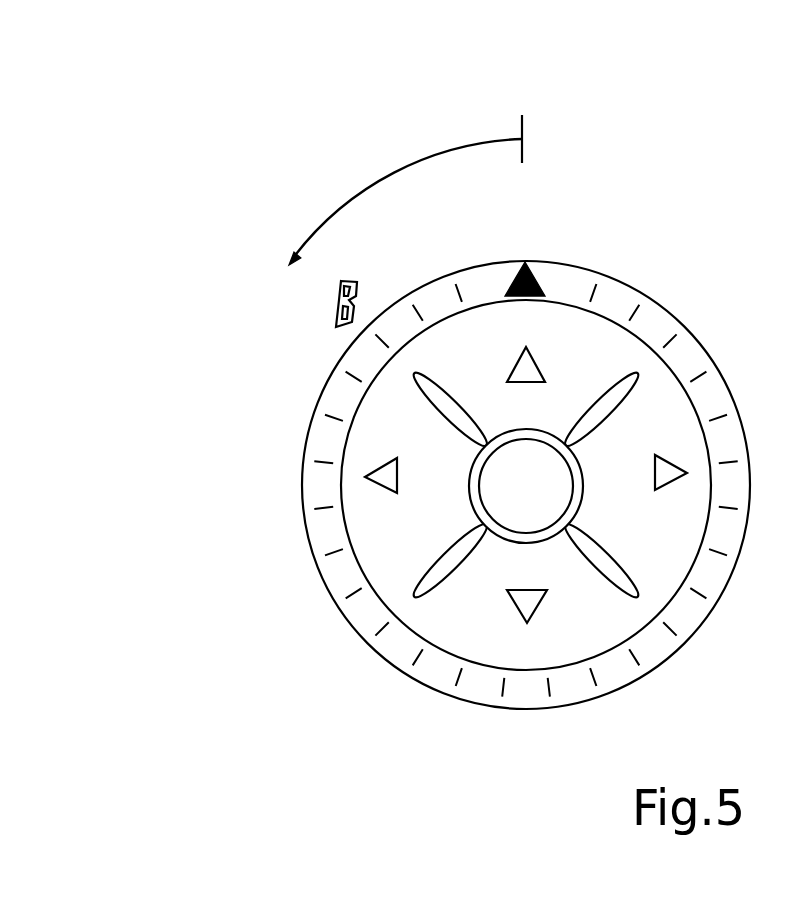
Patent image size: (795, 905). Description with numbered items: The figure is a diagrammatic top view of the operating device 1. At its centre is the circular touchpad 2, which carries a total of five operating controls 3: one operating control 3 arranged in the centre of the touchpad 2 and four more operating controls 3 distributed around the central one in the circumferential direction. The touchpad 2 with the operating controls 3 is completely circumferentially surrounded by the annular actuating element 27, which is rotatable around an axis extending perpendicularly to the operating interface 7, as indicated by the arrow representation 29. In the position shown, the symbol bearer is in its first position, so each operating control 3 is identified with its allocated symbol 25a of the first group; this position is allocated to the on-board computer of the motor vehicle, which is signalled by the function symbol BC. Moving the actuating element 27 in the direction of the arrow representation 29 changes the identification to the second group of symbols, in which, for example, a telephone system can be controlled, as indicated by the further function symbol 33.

The operating device 1 is at (226, 232).
The touchpad 2 is at (612, 358).
The operating controls 3 is at (566, 416).
The operating interface 7 is at (436, 350).
The symbols of the first group 25a is at (530, 349).
The actuating element 27 is at (560, 280).
The arrow representation 29 is at (383, 171).
The further function symbol 33 is at (318, 319).